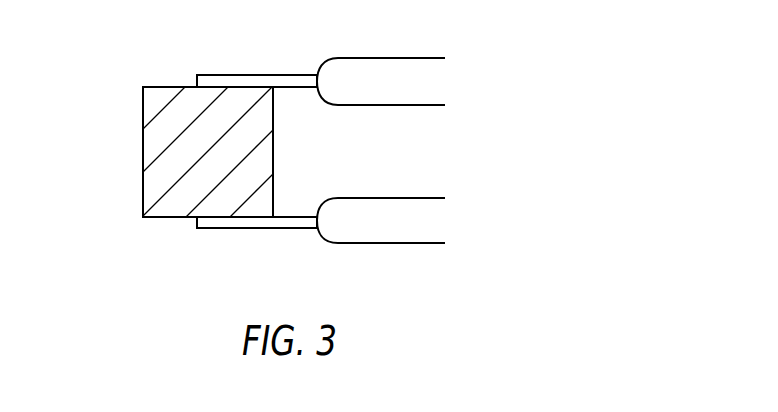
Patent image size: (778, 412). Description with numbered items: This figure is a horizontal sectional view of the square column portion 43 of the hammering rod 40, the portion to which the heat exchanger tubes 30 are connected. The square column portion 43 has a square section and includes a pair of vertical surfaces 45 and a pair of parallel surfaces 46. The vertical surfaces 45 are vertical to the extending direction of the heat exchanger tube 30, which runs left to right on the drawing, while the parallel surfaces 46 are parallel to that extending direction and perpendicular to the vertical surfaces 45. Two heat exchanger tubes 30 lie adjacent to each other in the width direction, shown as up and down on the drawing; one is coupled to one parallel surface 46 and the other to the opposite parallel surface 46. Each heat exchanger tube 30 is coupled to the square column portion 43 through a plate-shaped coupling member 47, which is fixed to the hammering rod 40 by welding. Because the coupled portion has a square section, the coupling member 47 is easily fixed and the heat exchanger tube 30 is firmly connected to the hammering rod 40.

The heat exchanger tube 30 is at (393, 78).
The hammering rod 40 is at (117, 163).
The square column portion 43 is at (141, 200).
The vertical surface 45 is at (143, 130).
The parallel surface 46 is at (179, 86).
The coupling member 47 is at (269, 72).